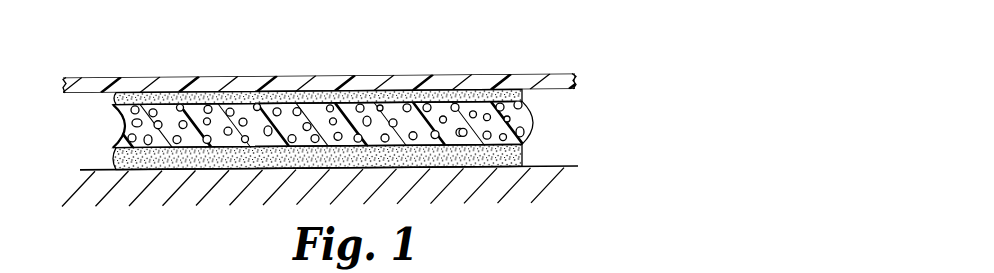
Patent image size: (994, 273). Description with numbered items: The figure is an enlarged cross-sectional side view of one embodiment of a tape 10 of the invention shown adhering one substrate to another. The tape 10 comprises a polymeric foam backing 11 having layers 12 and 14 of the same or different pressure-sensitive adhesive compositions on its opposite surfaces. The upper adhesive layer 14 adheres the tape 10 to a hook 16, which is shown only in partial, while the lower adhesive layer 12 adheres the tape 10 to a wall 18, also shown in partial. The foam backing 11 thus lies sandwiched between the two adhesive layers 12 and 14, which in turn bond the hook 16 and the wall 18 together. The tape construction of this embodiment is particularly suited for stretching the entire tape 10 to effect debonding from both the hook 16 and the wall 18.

The tape 10 is at (613, 100).
The polymeric foam backing 11 is at (523, 122).
The layer of pressure-sensitive adhesive 12 is at (115, 159).
The layer of pressure-sensitive adhesive 14 is at (117, 94).
The hook 16 is at (336, 82).
The wall 18 is at (557, 168).